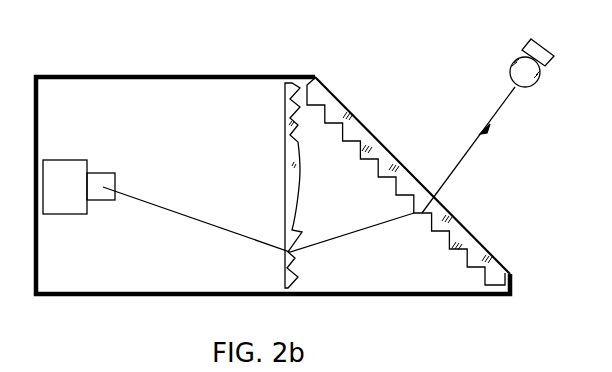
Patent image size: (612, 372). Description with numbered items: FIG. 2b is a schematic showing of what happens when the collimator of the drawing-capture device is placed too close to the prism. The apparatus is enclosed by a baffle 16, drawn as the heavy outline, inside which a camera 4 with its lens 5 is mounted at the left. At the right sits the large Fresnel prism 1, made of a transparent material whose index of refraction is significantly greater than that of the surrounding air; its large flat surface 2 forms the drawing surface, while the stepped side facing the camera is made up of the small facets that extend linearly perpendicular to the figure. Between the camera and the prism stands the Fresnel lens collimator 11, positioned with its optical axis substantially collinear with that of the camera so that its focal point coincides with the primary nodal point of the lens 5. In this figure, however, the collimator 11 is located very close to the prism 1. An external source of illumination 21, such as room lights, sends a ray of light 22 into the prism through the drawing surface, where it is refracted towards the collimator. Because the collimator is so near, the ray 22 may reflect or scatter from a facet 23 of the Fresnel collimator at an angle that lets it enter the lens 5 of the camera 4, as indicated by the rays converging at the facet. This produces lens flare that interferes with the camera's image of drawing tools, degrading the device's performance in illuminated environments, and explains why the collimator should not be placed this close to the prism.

The Fresnel prism 1 is at (474, 242).
The flat surface 2 is at (458, 219).
The camera 4 is at (53, 206).
The lens 5 is at (103, 171).
The Fresnel lens collimator 11 is at (294, 76).
The enclosing baffle 16 is at (220, 76).
The external source of illumination 21 is at (532, 86).
The ray of light 22 is at (472, 152).
The facet 23 is at (300, 258).